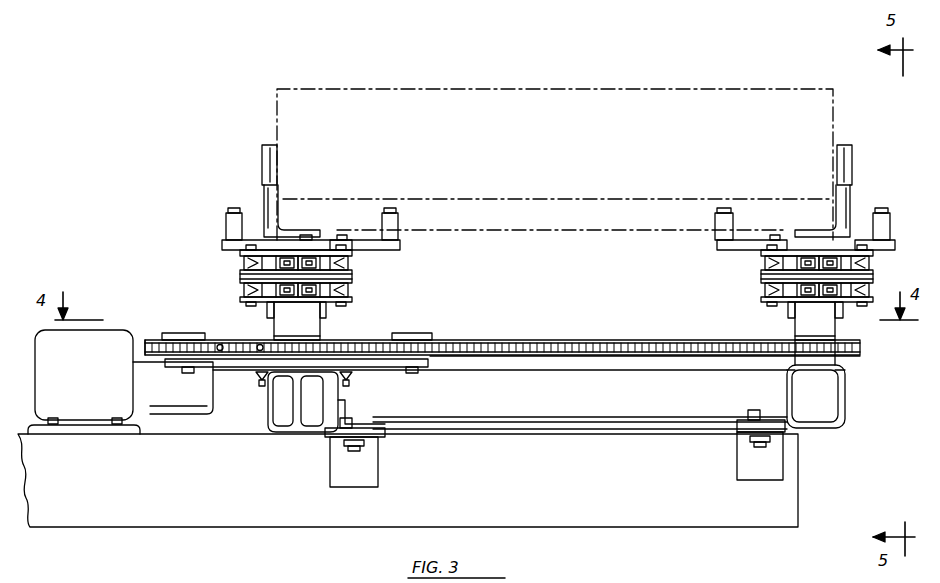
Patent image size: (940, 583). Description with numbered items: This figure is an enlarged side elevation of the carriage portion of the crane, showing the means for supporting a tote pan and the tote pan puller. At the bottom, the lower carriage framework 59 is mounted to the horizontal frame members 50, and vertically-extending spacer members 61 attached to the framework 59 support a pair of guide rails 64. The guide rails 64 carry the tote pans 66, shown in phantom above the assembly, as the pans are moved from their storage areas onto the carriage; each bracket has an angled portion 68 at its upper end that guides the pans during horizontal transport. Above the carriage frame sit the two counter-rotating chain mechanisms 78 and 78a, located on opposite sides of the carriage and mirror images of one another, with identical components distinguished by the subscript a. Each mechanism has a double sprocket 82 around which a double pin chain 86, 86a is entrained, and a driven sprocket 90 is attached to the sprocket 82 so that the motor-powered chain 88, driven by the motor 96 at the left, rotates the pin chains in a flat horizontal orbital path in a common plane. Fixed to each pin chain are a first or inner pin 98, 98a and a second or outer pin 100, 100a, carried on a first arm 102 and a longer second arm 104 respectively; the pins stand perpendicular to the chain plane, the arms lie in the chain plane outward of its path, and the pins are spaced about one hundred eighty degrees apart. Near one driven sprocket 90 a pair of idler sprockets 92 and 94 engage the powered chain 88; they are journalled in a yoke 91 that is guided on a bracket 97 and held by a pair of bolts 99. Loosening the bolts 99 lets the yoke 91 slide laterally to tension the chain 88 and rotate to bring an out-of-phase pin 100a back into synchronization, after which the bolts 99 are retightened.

The horizontal frame members 50 is at (800, 480).
The lower carriage framework 59 is at (845, 395).
The spacer members 61 is at (835, 360).
The guide rails 64 is at (262, 160).
The tote pans 66 is at (540, 88).
The angled portion 68 is at (268, 208).
The chain mechanism 78 is at (761, 300).
The chain mechanism 78a is at (352, 300).
The sprocket 82 is at (252, 290).
The pin chain 86 is at (875, 277).
The pin chain 86a is at (355, 277).
The motor-powered chain 88 is at (580, 340).
The driven sprocket 90 is at (330, 345).
The yoke 91 is at (205, 370).
The idler sprocket 92 is at (147, 336).
The idler sprocket 94 is at (455, 344).
The motor 96 is at (90, 392).
The bracket 97 is at (265, 372).
The first or inner pin 98 is at (887, 214).
The first or inner pin 98a is at (224, 220).
The bolts 99 is at (260, 386).
The second or outer pin 100 is at (714, 233).
The second or outer pin 100a is at (398, 233).
The first arm 102 is at (222, 246).
The second arm 104 is at (396, 250).